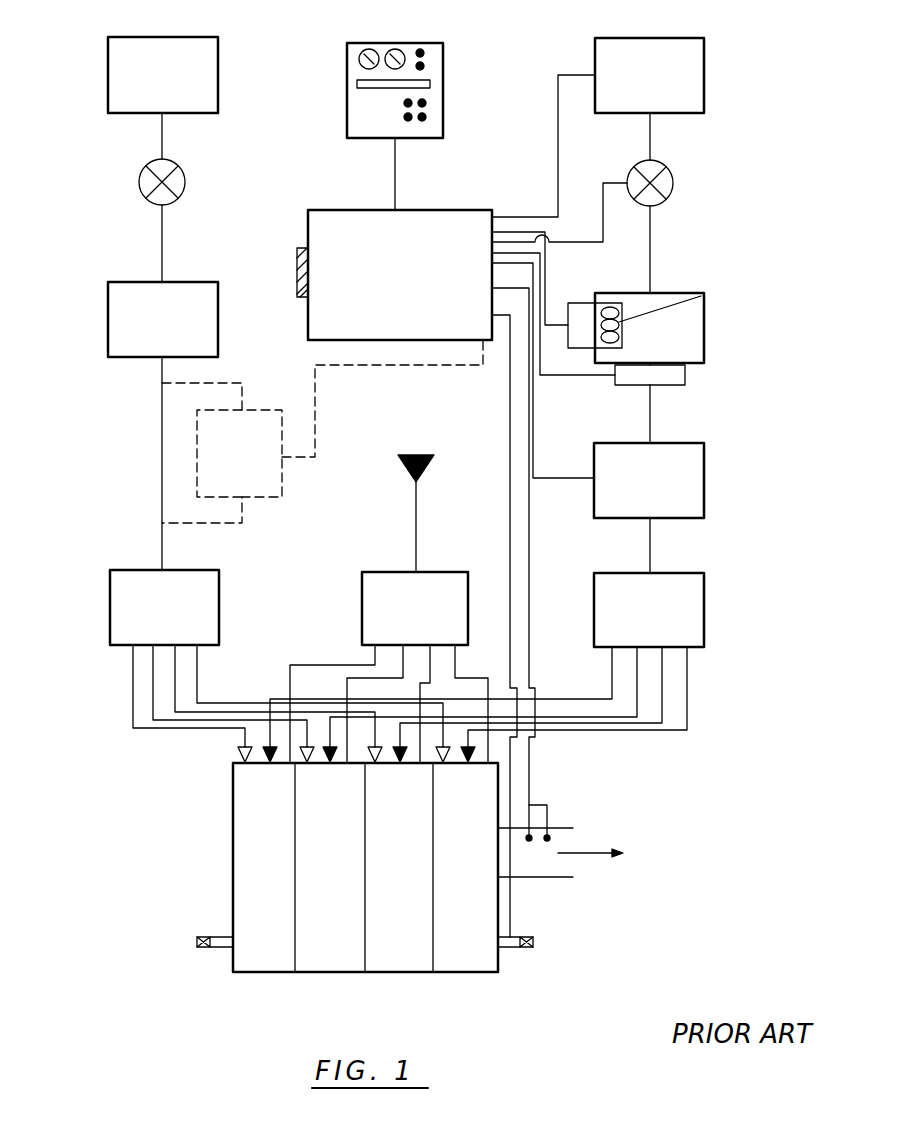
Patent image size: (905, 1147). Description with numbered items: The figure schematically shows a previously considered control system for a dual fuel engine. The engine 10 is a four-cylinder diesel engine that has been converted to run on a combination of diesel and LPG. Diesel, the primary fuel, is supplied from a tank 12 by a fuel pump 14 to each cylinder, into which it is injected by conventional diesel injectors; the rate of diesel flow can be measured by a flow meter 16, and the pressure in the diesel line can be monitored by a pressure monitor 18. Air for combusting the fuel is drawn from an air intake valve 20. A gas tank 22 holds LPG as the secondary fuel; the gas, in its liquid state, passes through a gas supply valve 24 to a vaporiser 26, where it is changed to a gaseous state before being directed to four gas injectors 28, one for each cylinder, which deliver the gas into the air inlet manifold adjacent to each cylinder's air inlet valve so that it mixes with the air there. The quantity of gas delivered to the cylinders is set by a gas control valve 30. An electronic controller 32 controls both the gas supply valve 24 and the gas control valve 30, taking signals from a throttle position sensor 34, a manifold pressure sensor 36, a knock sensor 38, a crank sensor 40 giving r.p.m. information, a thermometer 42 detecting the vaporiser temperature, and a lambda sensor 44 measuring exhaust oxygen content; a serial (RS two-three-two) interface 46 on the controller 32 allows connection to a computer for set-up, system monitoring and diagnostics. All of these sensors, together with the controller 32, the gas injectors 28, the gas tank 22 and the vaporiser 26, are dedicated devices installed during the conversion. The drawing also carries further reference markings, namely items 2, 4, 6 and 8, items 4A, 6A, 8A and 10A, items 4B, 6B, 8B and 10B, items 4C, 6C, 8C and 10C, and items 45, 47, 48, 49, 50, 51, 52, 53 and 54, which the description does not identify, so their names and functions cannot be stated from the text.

The fuel cell stack 2 is at (215, 906).
The fuel cell 4 is at (262, 968).
The fuel cell 6 is at (330, 968).
The fuel cell 8 is at (398, 968).
The engine 10 is at (470, 968).
The fuel inlet of cell 4 4A is at (238, 757).
The fuel inlet of cell 6 6A is at (285, 763).
The fuel inlet of cell 8 8A is at (370, 763).
The fuel inlet of cell 10 10A is at (397, 763).
The oxidant inlet of cell 4 4B is at (325, 763).
The oxidant inlet of cell 6 6B is at (392, 763).
The oxidant inlet of cell 8 8B is at (468, 763).
The oxidant inlet of cell 10 10B is at (435, 763).
The electrical lead of cell 4 4C is at (290, 660).
The electrical lead of cell 6 6C is at (370, 675).
The electrical lead of cell 8 8C is at (430, 665).
The electrical lead of cell 10 10C is at (490, 683).
The tank 12 is at (220, 950).
The fuel pump 14 is at (124, 80).
The flow meter 16 is at (605, 60).
The pressure monitor 18 is at (160, 250).
The air intake valve 20 is at (652, 140).
The gas tank 22 is at (143, 182).
The gas supply valve 24 is at (674, 188).
The vaporiser 26 is at (704, 328).
The gas injectors 28 is at (690, 294).
The gas control valve 30 is at (668, 376).
The electronic controller 32 is at (688, 470).
The throttle position sensor 34 is at (680, 600).
The manifold pressure sensor 36 is at (398, 463).
The knock sensor 38 is at (128, 326).
The crank sensor 40 is at (130, 617).
The thermometer 42 is at (207, 455).
The lambda sensor 44 is at (304, 243).
The valve control line 45 is at (603, 183).
The RS232 interface 46 is at (545, 300).
The switch control line 47 is at (565, 378).
The flow controller signal line 48 is at (550, 482).
The sensor signal line 49 is at (529, 598).
The sensor 50 is at (537, 837).
The exhaust outlet 51 is at (573, 830).
The valve signal line 52 is at (510, 488).
The connector 53 is at (300, 302).
The control panel 54 is at (395, 188).